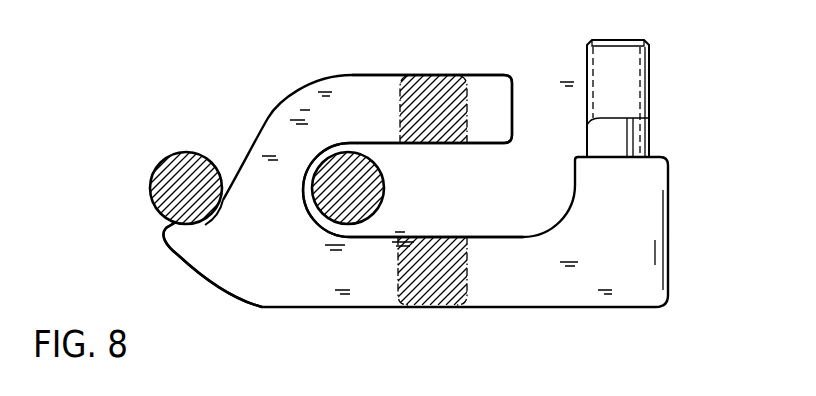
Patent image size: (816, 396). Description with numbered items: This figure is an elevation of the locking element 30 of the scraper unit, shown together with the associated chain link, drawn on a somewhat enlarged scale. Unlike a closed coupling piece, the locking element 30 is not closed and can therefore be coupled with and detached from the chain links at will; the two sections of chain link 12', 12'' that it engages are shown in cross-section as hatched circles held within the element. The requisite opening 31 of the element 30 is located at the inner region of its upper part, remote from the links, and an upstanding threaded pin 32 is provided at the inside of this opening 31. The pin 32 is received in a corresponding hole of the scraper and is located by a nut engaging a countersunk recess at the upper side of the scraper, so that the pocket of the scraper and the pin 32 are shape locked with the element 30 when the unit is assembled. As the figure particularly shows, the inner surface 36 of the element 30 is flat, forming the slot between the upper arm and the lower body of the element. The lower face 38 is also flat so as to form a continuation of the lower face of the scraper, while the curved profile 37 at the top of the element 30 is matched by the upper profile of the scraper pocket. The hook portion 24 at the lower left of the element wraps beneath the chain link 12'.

The chain link 12' is at (182, 182).
The chain link 12'' is at (344, 156).
The hook 24 is at (190, 247).
The locking element 30 is at (330, 100).
The opening 31 is at (563, 118).
The threaded pin 32 is at (633, 80).
The inner surface 36 is at (432, 143).
The curved profile 37 is at (402, 73).
The lower face 38 is at (427, 306).